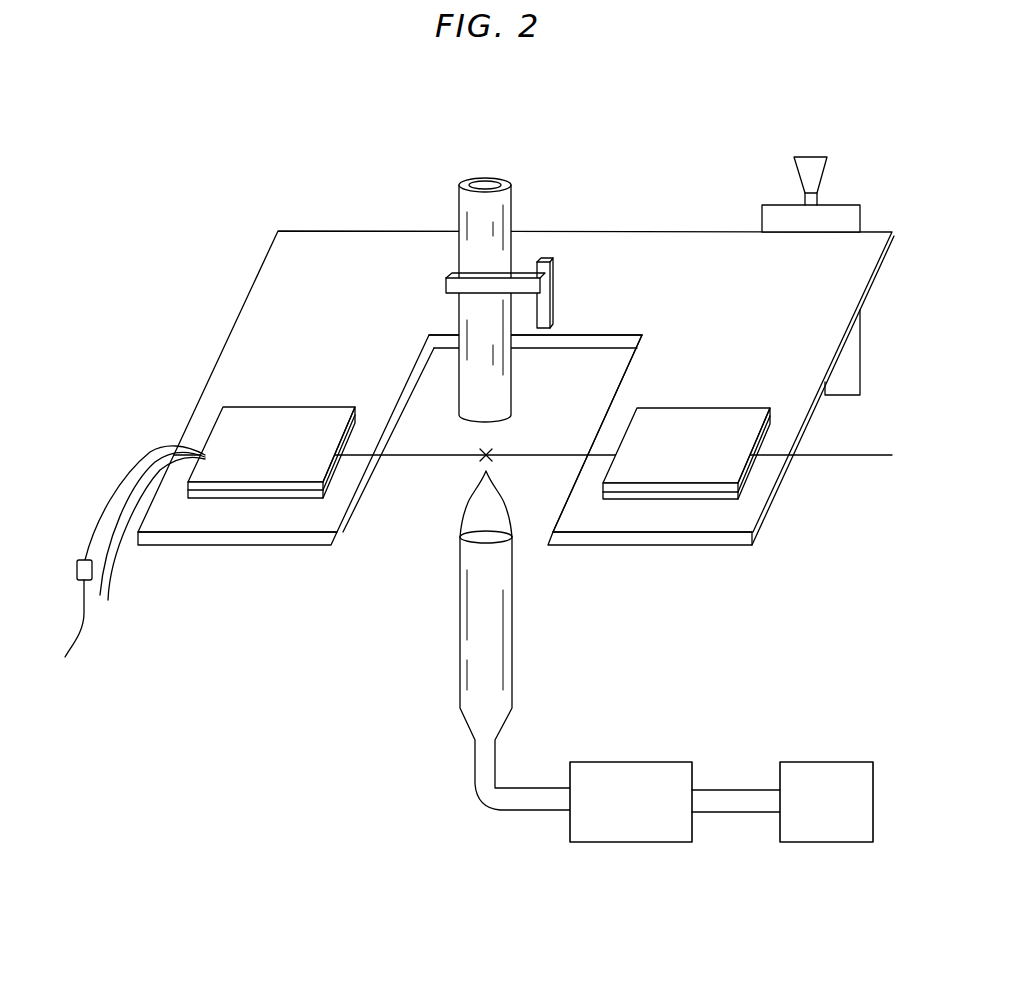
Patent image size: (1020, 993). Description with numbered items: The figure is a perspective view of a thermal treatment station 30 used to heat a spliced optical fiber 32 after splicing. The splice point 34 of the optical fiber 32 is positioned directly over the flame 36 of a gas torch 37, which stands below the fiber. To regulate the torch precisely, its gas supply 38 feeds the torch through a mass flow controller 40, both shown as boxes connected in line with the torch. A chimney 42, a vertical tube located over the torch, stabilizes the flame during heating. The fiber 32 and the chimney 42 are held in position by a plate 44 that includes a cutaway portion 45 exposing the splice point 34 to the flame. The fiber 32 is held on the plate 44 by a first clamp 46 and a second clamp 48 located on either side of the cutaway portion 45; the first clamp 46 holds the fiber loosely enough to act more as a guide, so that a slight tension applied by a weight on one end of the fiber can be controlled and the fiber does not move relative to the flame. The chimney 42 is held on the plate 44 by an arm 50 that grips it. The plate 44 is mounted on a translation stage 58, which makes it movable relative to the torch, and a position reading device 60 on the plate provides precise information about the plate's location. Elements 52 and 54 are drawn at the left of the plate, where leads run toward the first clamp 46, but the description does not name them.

The thermal treatment station 30 is at (807, 122).
The spliced optical fiber 32 is at (858, 453).
The splice point 34 is at (486, 455).
The flame 36 is at (458, 528).
The gas torch 37 is at (513, 630).
The gas supply 38 is at (822, 758).
The mass flow controller 40 is at (627, 760).
The chimney 42 is at (483, 177).
The plate 44 is at (628, 228).
The cutaway portion 45 is at (550, 405).
The first clamp 46 is at (287, 417).
The second clamp 48 is at (700, 422).
The arm 50 is at (445, 277).
The connector 52 is at (77, 560).
The wires 54 is at (145, 457).
The translation stage 58 is at (860, 360).
The position reading device 60 is at (798, 172).